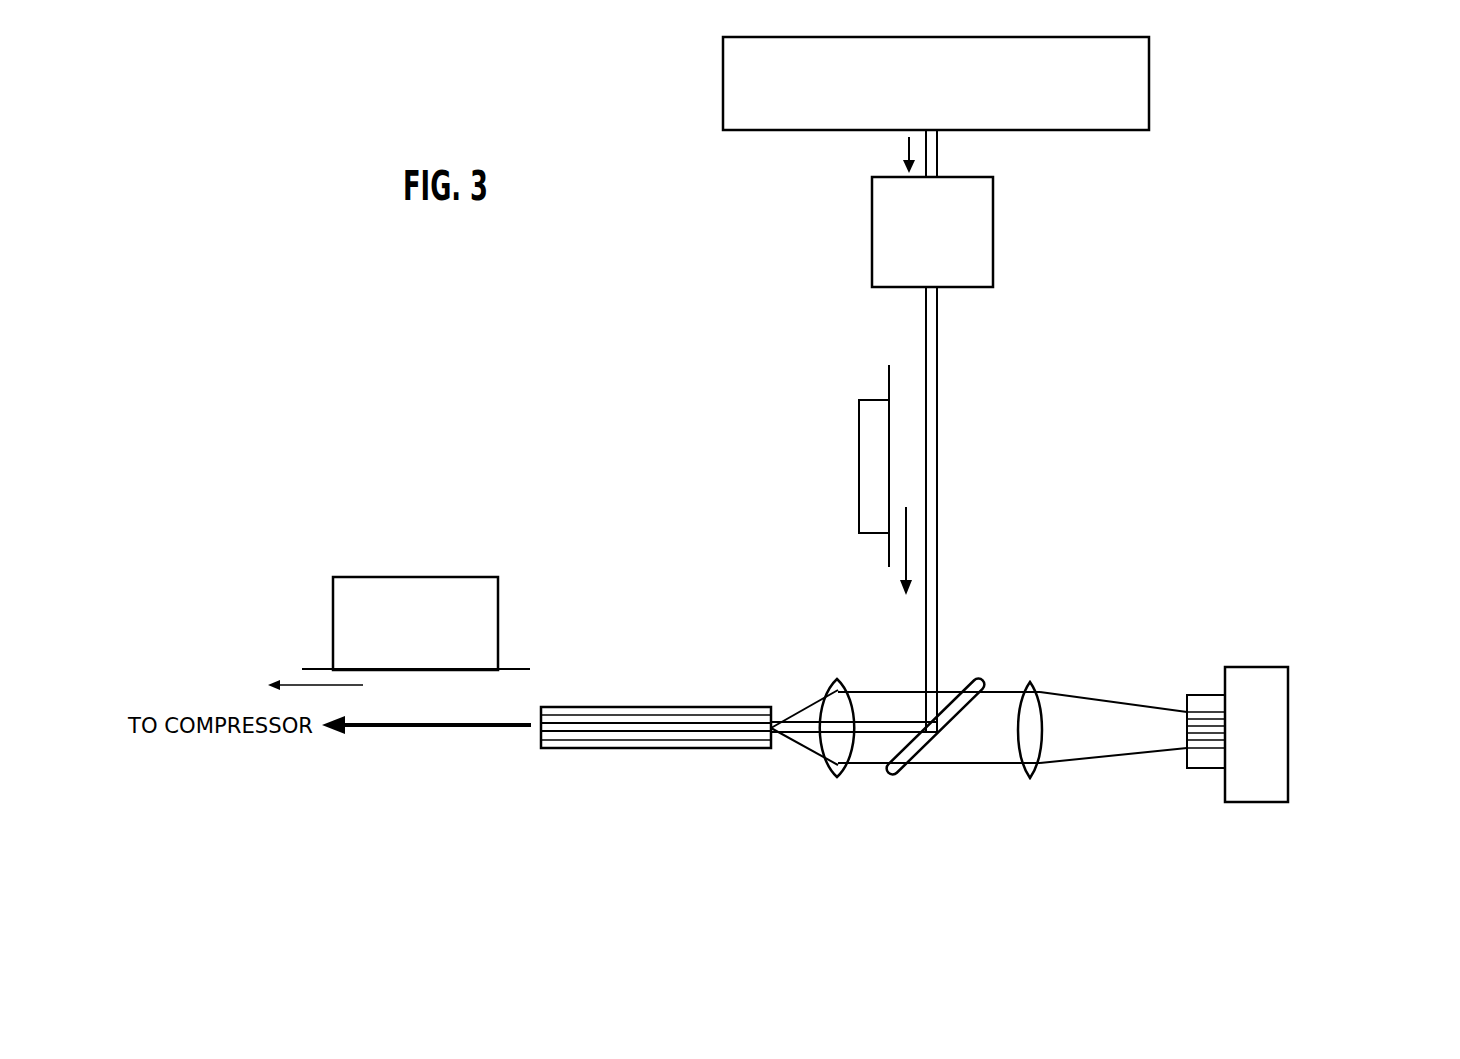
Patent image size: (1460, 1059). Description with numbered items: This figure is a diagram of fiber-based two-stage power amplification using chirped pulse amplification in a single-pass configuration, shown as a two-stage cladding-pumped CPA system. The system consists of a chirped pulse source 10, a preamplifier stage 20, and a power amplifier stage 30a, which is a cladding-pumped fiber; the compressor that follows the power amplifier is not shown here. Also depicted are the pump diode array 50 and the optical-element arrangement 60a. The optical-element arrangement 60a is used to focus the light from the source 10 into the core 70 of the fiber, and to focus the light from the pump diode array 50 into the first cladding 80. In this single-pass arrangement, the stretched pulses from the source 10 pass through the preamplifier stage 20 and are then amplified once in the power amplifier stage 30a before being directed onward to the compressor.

The chirped pulse source 10 is at (1149, 82).
The preamplifier stage 20 is at (993, 243).
The power amplifier stage 30a is at (669, 641).
The pump diode array 50 is at (1248, 636).
The optical-element arrangement 60a is at (978, 630).
The core 70 is at (656, 709).
The first cladding 80 is at (656, 700).